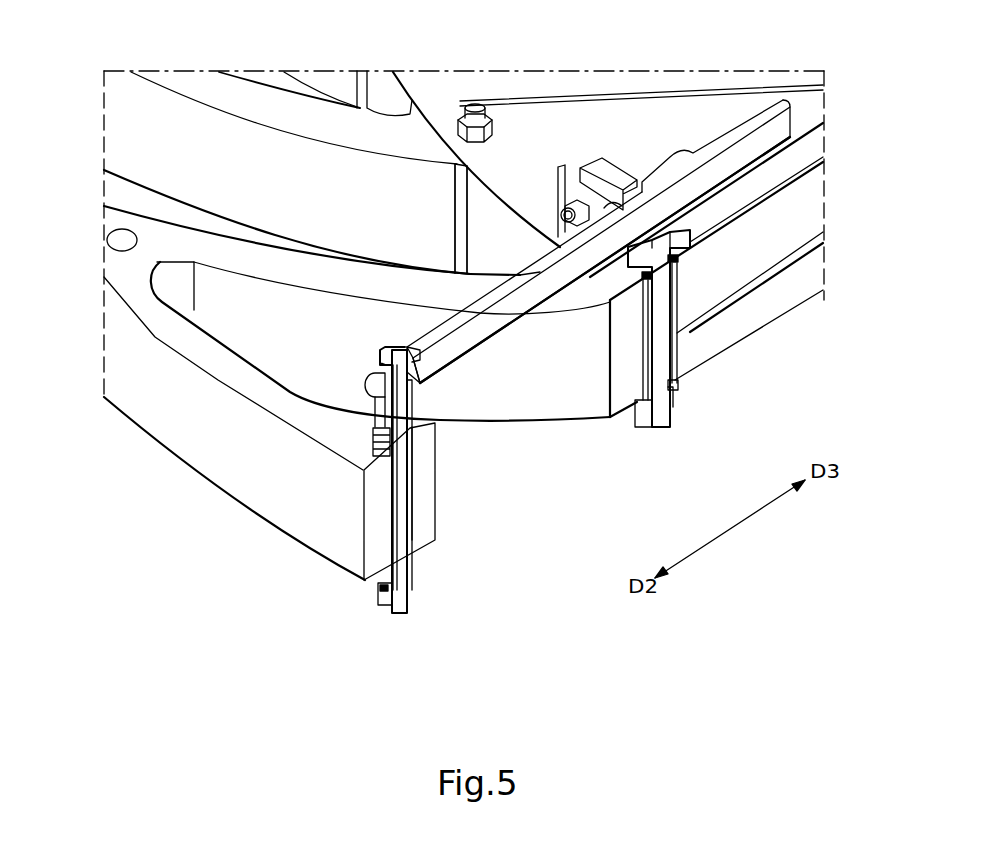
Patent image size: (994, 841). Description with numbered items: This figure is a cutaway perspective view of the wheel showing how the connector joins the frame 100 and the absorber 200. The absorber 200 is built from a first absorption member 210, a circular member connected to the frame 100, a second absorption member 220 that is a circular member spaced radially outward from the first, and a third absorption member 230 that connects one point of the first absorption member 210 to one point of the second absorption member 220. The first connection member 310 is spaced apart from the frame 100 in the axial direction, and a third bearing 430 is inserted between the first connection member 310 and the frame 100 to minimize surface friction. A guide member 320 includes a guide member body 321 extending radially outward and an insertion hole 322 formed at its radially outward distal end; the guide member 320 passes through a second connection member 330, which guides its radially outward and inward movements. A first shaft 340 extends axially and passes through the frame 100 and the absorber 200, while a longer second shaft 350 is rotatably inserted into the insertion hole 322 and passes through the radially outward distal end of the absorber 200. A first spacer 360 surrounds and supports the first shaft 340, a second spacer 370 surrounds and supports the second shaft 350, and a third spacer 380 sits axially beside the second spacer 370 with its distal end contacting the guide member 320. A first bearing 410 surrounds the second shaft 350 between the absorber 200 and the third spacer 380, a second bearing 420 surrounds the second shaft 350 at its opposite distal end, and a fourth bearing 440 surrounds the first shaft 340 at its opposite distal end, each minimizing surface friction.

The frame 100 is at (523, 167).
The absorber 200 is at (129, 436).
The first absorption member 210 is at (491, 227).
The second absorption member 220 is at (218, 452).
The third absorption member 230 is at (262, 310).
The first connection member 310 is at (572, 188).
The guide member 320 is at (545, 490).
The guide member body 321 is at (473, 338).
The insertion hole 322 is at (412, 376).
The second connection member 330 is at (670, 156).
The first shaft 340 is at (658, 420).
The second shaft 350 is at (400, 600).
The first spacer 360 is at (673, 342).
The second spacer 370 is at (413, 528).
The third spacer 380 is at (380, 423).
The first bearing 410 is at (385, 465).
The second bearing 420 is at (382, 589).
The third bearing 430 is at (673, 262).
The fourth bearing 440 is at (673, 380).